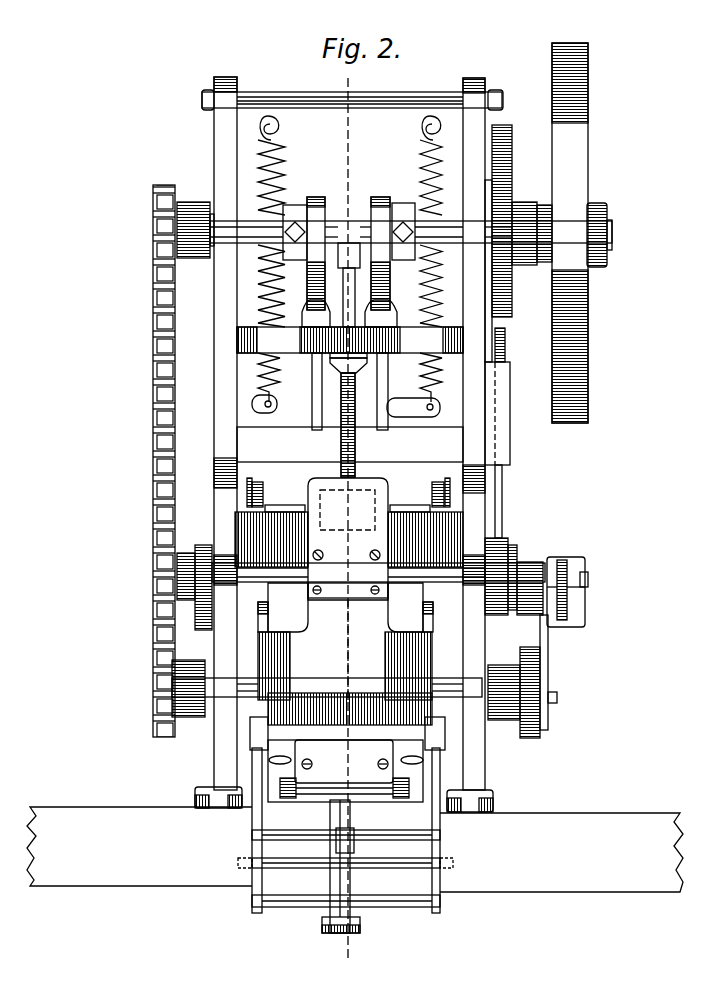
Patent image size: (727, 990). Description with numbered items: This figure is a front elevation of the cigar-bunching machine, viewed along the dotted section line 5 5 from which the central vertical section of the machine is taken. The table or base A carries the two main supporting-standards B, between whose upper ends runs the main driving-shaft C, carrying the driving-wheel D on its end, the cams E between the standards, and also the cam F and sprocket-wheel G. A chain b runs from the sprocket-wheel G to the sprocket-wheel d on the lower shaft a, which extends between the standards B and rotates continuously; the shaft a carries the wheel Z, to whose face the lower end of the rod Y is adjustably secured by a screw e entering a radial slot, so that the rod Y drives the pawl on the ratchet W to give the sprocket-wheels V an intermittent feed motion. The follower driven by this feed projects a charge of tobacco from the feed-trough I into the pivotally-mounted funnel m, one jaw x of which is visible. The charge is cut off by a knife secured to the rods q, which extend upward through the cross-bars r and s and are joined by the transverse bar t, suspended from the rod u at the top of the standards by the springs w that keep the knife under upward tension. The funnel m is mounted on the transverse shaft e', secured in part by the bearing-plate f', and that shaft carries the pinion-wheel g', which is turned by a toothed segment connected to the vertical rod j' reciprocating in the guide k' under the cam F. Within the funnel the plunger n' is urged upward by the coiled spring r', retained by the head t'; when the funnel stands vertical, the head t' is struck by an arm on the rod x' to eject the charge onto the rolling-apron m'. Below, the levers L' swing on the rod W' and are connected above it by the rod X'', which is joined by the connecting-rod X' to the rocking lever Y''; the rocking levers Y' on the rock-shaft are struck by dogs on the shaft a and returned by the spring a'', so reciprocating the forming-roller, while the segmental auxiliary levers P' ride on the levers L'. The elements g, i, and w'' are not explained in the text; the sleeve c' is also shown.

The section line 5 is at (346, 524).
The main supporting-standards B is at (344, 444).
The rod u is at (352, 106).
The springs w is at (350, 221).
The main driving-shaft C is at (411, 232).
The sprocket-wheel G is at (195, 220).
The cams E is at (349, 252).
The spring a'' is at (345, 522).
The rod x' is at (342, 297).
The cross-bar s is at (350, 340).
The collar w'' is at (328, 362).
The head t' is at (352, 371).
The coiled spring r' is at (354, 425).
The rods q is at (312, 385).
The transverse bar t is at (346, 406).
The cross-bar r is at (350, 444).
The feed-trough I is at (308, 508).
The guide g is at (348, 492).
The guide i is at (348, 494).
The transverse shaft e' is at (378, 582).
The bearing-plate f' is at (348, 592).
The sprocket-wheels V is at (194, 579).
The chain b is at (156, 461).
The sprocket-wheel d is at (172, 688).
The shaft a is at (327, 679).
The funnel m is at (345, 641).
The rocking levers Y' is at (344, 617).
The rolling-apron m' is at (350, 706).
The jaw x is at (340, 650).
The segmental auxiliary levers P' is at (343, 731).
The levers L' is at (342, 830).
The rocking lever Y'' is at (346, 826).
The rod X'' is at (365, 840).
The rod W' is at (345, 868).
The connecting-rod X' is at (345, 866).
The table or base A is at (355, 849).
The cam F is at (522, 221).
The driving-wheel D is at (582, 233).
The guide k' is at (504, 322).
The vertical reciprocating rod j' is at (505, 501).
The plunger n' is at (503, 565).
The pinion-wheel g' is at (525, 571).
The ratchet W is at (567, 583).
The wheel Z is at (514, 692).
The rod Y is at (549, 672).
The screw e is at (557, 697).